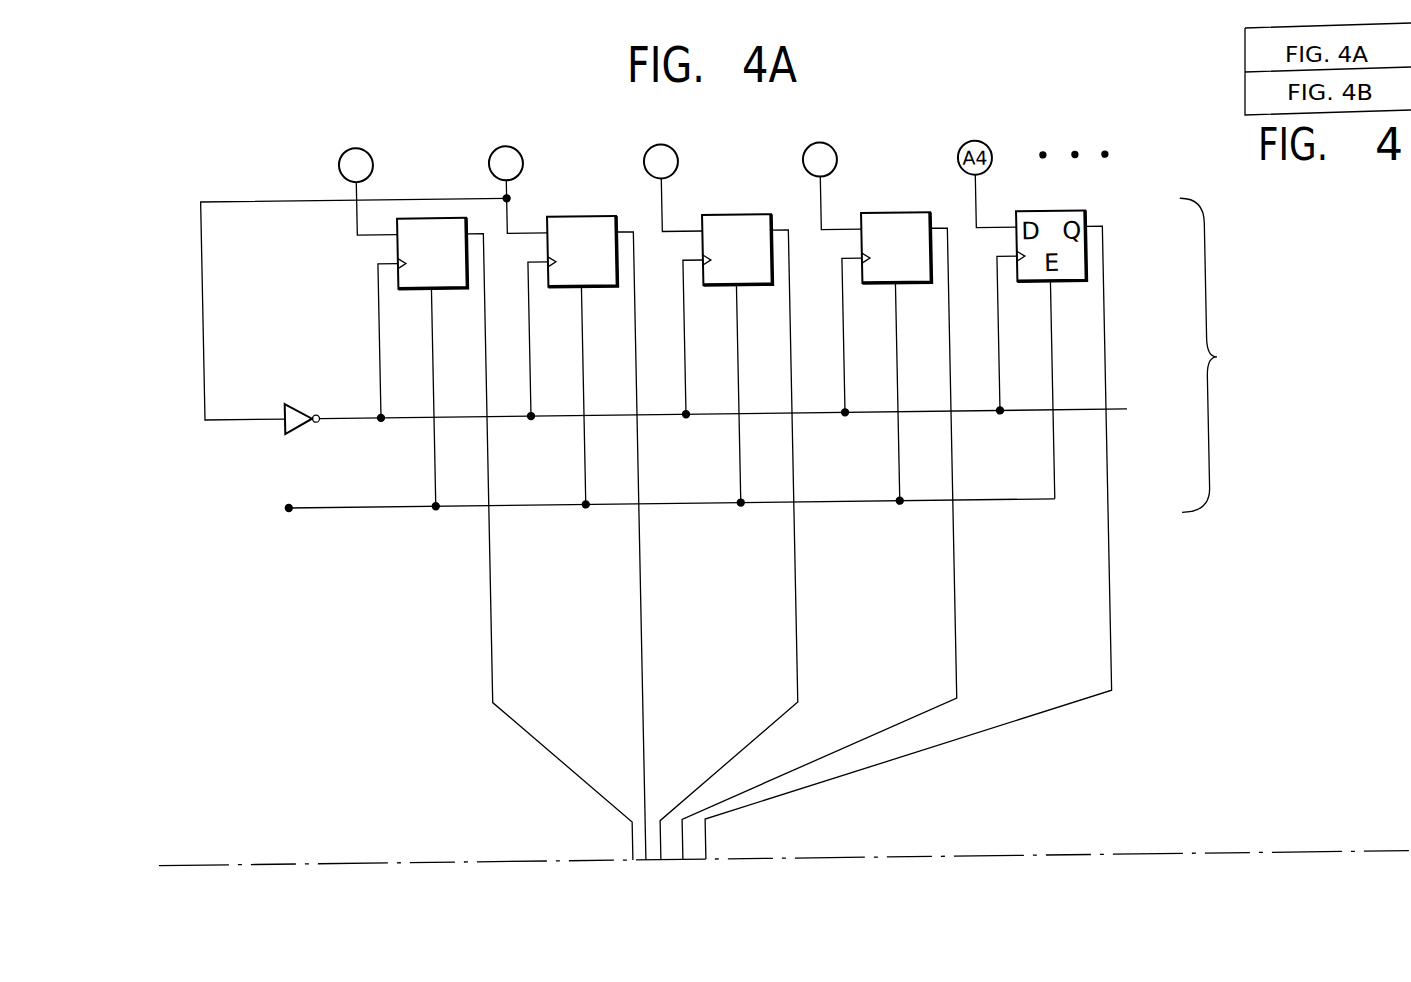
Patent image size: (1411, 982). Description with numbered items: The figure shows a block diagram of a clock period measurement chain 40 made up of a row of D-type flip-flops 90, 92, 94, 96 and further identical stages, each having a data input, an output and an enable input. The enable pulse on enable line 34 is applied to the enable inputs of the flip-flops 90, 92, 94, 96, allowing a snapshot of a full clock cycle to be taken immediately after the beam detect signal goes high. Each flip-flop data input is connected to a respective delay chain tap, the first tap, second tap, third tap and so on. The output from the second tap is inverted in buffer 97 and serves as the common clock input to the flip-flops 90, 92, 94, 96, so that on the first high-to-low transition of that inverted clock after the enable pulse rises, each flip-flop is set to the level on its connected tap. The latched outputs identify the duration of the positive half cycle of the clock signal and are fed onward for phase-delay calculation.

The flip-flop 90 is at (453, 221).
The flip-flop 92 is at (603, 221).
The flip-flop 94 is at (758, 221).
The flip-flop 96 is at (917, 221).
The buffer 97 is at (285, 431).
The enable line 34 is at (406, 507).
The clock period measurement chain 40 is at (1216, 354).